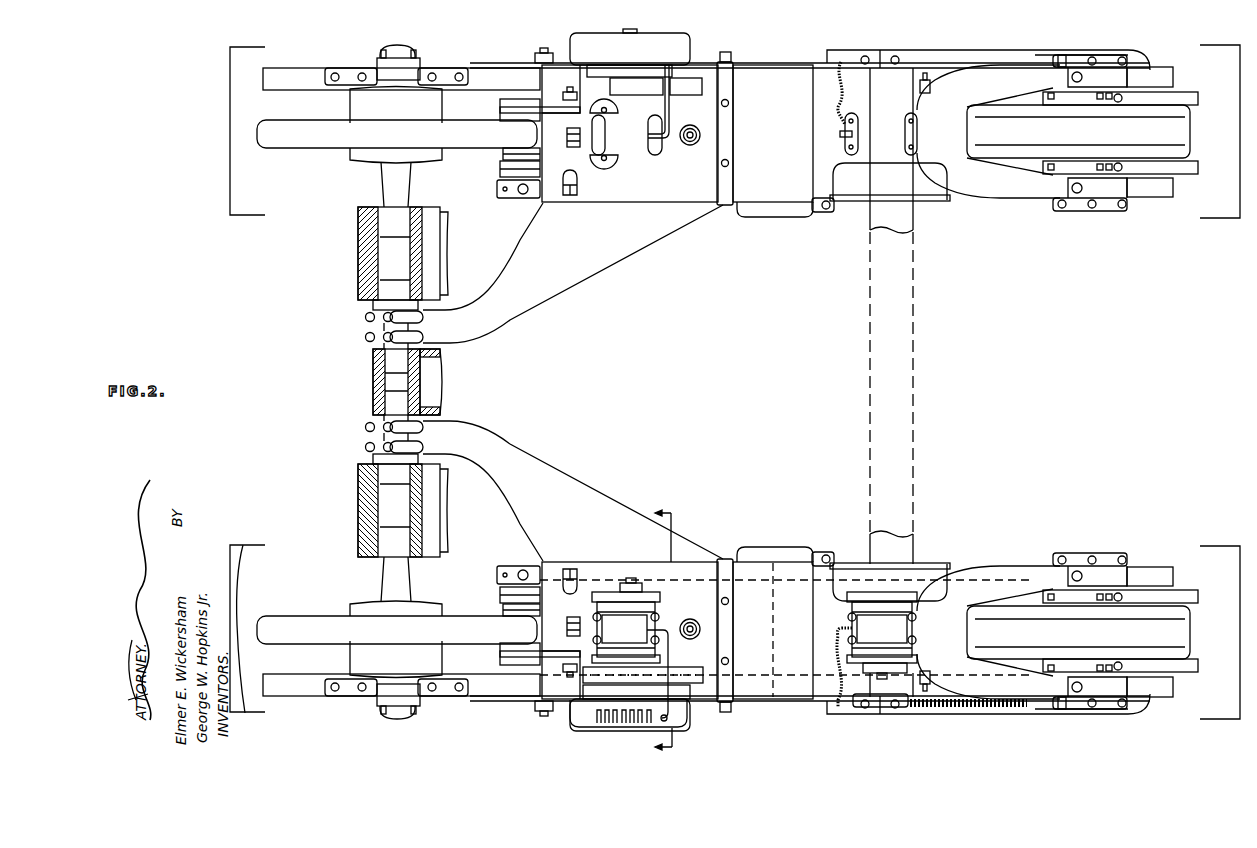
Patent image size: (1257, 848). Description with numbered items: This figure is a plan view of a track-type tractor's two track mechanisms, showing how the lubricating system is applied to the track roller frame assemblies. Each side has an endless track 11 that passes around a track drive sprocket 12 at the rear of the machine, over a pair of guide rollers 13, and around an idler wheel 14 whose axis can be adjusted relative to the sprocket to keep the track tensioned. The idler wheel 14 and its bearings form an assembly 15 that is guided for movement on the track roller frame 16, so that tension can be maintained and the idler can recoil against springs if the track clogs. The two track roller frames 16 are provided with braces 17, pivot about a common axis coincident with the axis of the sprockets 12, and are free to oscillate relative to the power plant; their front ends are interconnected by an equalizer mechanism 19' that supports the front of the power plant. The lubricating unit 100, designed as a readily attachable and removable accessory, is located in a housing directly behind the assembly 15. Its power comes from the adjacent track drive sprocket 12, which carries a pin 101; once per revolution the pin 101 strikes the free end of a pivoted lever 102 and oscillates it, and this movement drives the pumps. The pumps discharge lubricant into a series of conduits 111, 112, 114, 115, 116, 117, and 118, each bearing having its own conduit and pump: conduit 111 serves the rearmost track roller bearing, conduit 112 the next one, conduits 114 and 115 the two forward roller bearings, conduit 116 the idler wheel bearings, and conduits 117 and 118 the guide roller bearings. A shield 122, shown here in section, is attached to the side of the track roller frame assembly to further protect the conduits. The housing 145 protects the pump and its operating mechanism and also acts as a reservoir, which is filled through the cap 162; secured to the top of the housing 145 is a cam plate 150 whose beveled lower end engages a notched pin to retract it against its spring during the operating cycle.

The endless track 11 is at (1212, 708).
The track drive sprocket 12 is at (300, 623).
The guide rollers 13 is at (608, 605).
The idler wheel 14 is at (1180, 627).
The idler wheel assembly 15 is at (675, 635).
The track roller frame 16 is at (468, 700).
The braces 17 is at (525, 453).
The equalizer mechanism 19' is at (891, 382).
The lubricating unit 100 is at (583, 570).
The pin 101 is at (497, 648).
The lever 102 is at (542, 657).
The conduit 111 is at (597, 721).
The conduit 112 is at (605, 722).
The conduit 114 is at (622, 722).
The conduit 115 is at (630, 722).
The conduit 116 is at (640, 722).
The conduit 117 is at (649, 723).
The conduit 118 is at (668, 716).
The shield 122 is at (783, 703).
The housing 145 is at (702, 606).
The cam plate 150 is at (580, 613).
The cap 162 is at (700, 631).